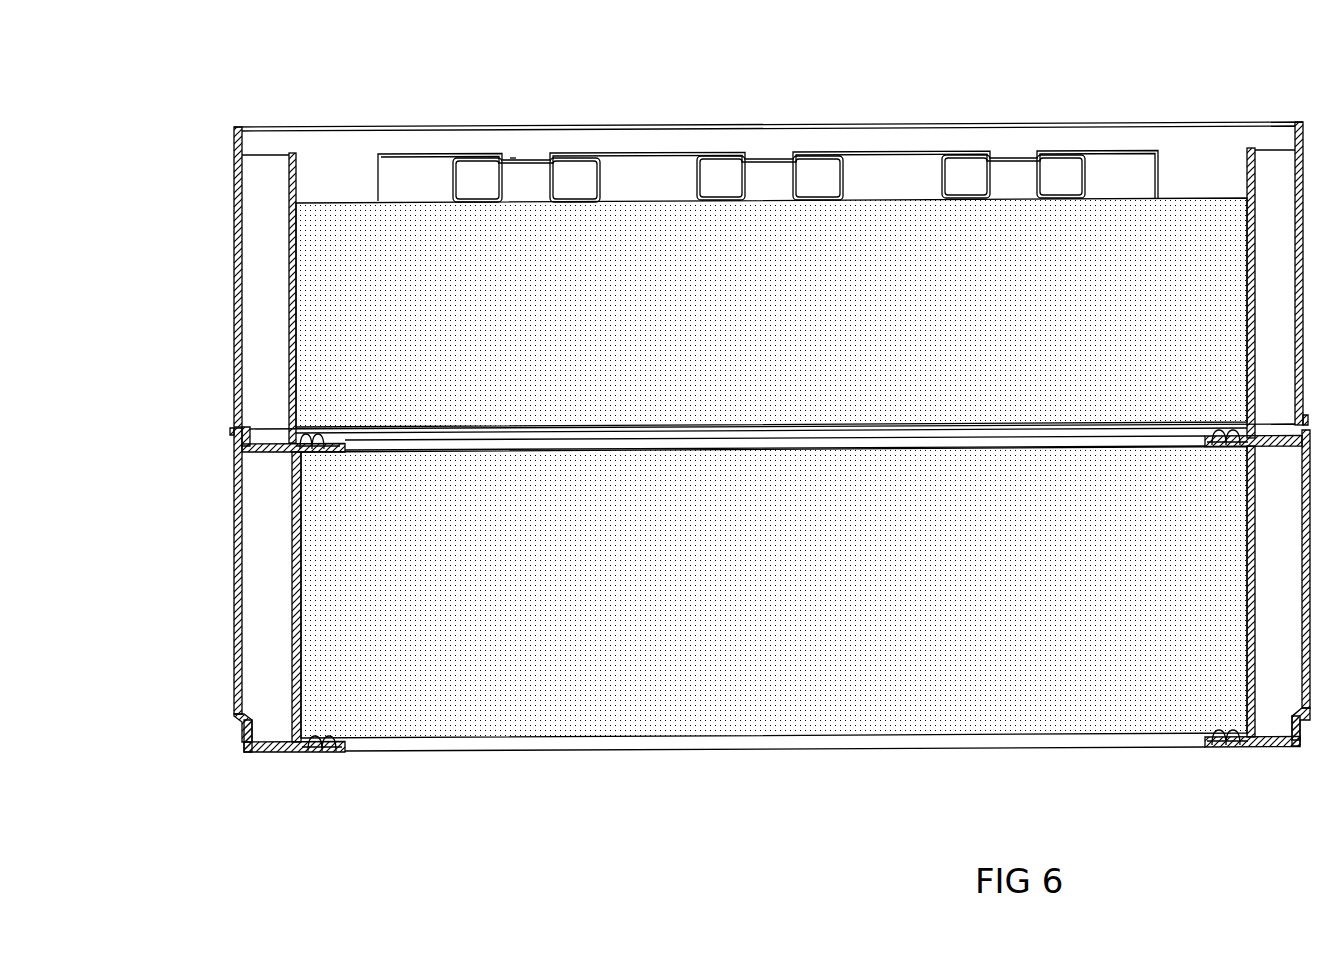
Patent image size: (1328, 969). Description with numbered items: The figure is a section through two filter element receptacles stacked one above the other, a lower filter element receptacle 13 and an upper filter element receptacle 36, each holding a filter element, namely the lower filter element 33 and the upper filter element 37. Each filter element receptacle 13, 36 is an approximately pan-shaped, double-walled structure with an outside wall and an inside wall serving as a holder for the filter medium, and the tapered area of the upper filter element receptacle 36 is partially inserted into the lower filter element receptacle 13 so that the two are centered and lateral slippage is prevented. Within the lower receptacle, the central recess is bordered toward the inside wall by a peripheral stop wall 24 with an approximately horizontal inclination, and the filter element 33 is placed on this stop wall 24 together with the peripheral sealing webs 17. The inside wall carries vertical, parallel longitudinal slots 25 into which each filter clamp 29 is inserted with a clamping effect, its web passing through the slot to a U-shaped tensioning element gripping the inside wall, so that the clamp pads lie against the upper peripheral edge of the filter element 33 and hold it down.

The filter element receptacle 13 is at (226, 641).
The peripheral sealing webs 17 is at (346, 752).
The peripheral stop wall 24 is at (315, 752).
The longitudinal slots 25 is at (534, 148).
The filter clamp 29 is at (509, 146).
The filter element 33 is at (320, 546).
The filter element receptacle 36 is at (222, 279).
The upper adsorbent bed 37 is at (330, 337).